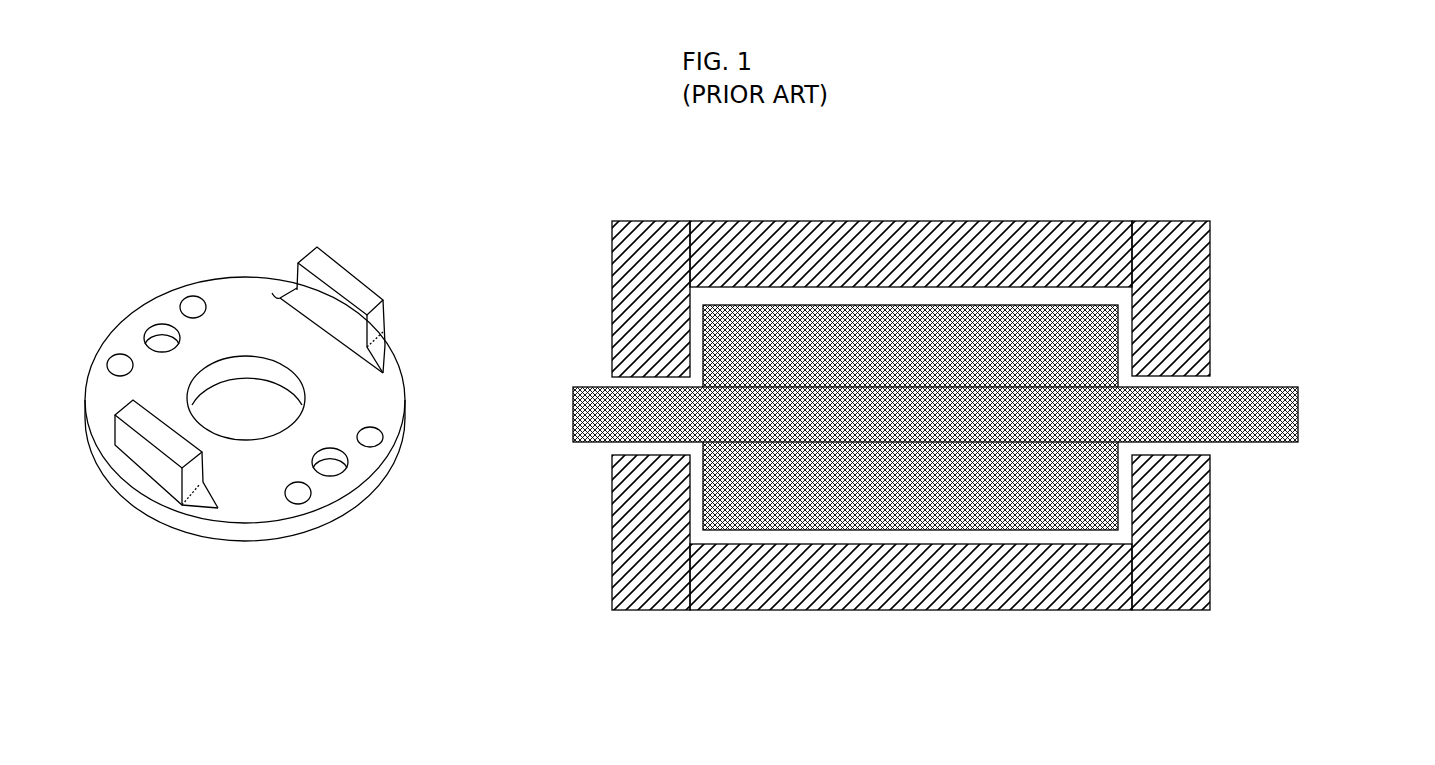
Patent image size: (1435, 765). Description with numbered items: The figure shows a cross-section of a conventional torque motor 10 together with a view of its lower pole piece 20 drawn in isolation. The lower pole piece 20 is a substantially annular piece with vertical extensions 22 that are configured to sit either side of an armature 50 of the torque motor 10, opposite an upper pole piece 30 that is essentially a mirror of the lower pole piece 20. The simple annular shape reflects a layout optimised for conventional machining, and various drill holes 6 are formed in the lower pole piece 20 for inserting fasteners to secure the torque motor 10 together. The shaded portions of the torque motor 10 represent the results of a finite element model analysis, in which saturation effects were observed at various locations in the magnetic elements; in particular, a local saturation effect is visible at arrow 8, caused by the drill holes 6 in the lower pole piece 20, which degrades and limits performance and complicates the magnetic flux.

The torque motor 10 is at (663, 198).
The lower pole piece 20 is at (1033, 588).
The vertical extensions 22 is at (1200, 511).
The upper pole piece 30 is at (793, 220).
The armature 50 is at (1298, 392).
The arrow 8 is at (112, 357).
The drill holes 6 is at (189, 297).